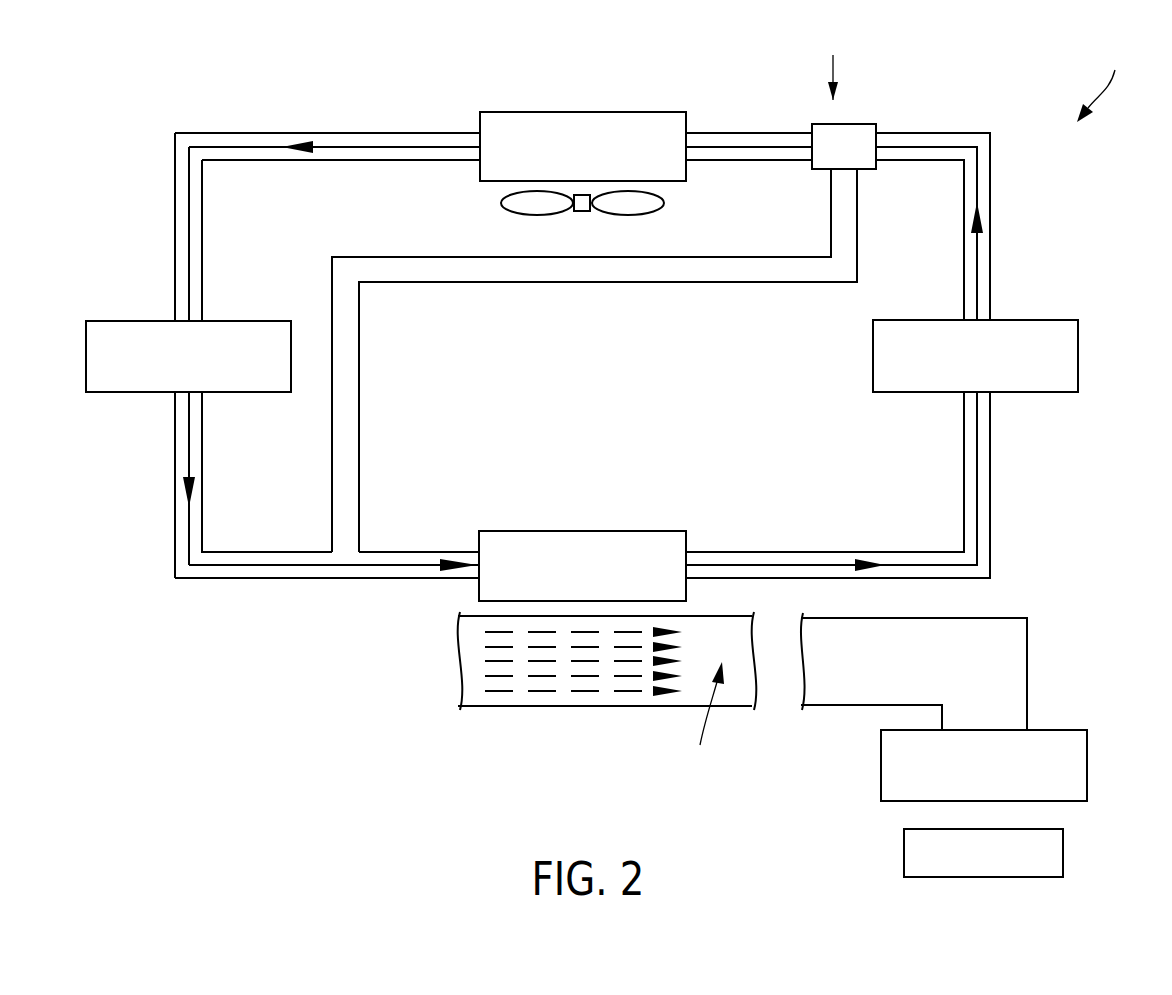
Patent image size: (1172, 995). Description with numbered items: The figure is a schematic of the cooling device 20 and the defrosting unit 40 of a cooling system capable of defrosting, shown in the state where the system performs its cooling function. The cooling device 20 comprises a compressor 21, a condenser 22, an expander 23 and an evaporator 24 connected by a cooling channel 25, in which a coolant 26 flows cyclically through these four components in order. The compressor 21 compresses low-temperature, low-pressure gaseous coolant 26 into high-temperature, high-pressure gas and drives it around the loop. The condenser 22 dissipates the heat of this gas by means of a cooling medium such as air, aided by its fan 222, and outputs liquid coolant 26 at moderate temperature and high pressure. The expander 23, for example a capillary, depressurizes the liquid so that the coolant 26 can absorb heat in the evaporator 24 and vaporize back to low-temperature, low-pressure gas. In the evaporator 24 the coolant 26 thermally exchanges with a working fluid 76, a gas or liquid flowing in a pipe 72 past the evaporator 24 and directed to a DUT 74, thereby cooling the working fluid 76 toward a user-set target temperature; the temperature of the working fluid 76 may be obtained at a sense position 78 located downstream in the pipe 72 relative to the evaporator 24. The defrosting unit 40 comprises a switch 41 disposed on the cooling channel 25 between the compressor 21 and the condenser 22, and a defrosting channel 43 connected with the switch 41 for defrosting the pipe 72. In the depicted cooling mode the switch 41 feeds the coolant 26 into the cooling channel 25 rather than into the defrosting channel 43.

The cooling device 20 is at (1103, 81).
The compressor 21 is at (1043, 320).
The condenser 22 is at (585, 112).
The fan 222 is at (664, 201).
The expander 23 is at (120, 321).
The evaporator 24 is at (479, 538).
The cooling channel 25 is at (400, 133).
The coolant 26 is at (938, 147).
The defrosting unit 40 is at (832, 61).
The switch 41 is at (843, 124).
The defrosting channel 43 is at (332, 398).
The pipe 72 is at (1027, 655).
The DUT 74 is at (1063, 852).
The working fluid 76 is at (515, 691).
The sense position 78 is at (702, 718).